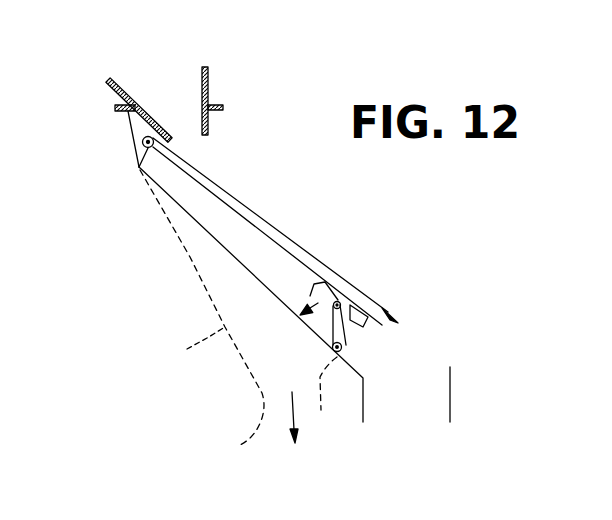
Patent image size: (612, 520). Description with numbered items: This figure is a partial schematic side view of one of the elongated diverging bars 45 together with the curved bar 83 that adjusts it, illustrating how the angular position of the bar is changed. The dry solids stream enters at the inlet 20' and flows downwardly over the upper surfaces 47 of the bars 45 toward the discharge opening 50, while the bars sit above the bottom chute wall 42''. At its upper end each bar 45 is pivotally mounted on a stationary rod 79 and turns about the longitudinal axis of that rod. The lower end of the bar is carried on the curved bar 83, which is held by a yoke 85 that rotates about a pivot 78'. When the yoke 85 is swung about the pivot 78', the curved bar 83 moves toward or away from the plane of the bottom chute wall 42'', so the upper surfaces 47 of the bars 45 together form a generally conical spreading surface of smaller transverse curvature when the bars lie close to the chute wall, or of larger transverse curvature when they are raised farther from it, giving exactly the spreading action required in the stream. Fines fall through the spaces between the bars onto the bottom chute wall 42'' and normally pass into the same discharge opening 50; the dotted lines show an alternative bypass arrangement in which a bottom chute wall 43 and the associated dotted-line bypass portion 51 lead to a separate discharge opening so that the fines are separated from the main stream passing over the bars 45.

The inlet 20' is at (232, 93).
The bottom chute wall 43 is at (130, 134).
The stationary rod 79 is at (139, 167).
The upper surfaces 47 is at (255, 212).
The diverging bars 45 is at (296, 256).
The curved bar 83 is at (340, 302).
The pivot 78' is at (399, 347).
The bottom chute wall 42'' is at (239, 294).
The path of movement 51 is at (238, 311).
The yoke 85 is at (286, 391).
The discharge opening 50 is at (450, 390).